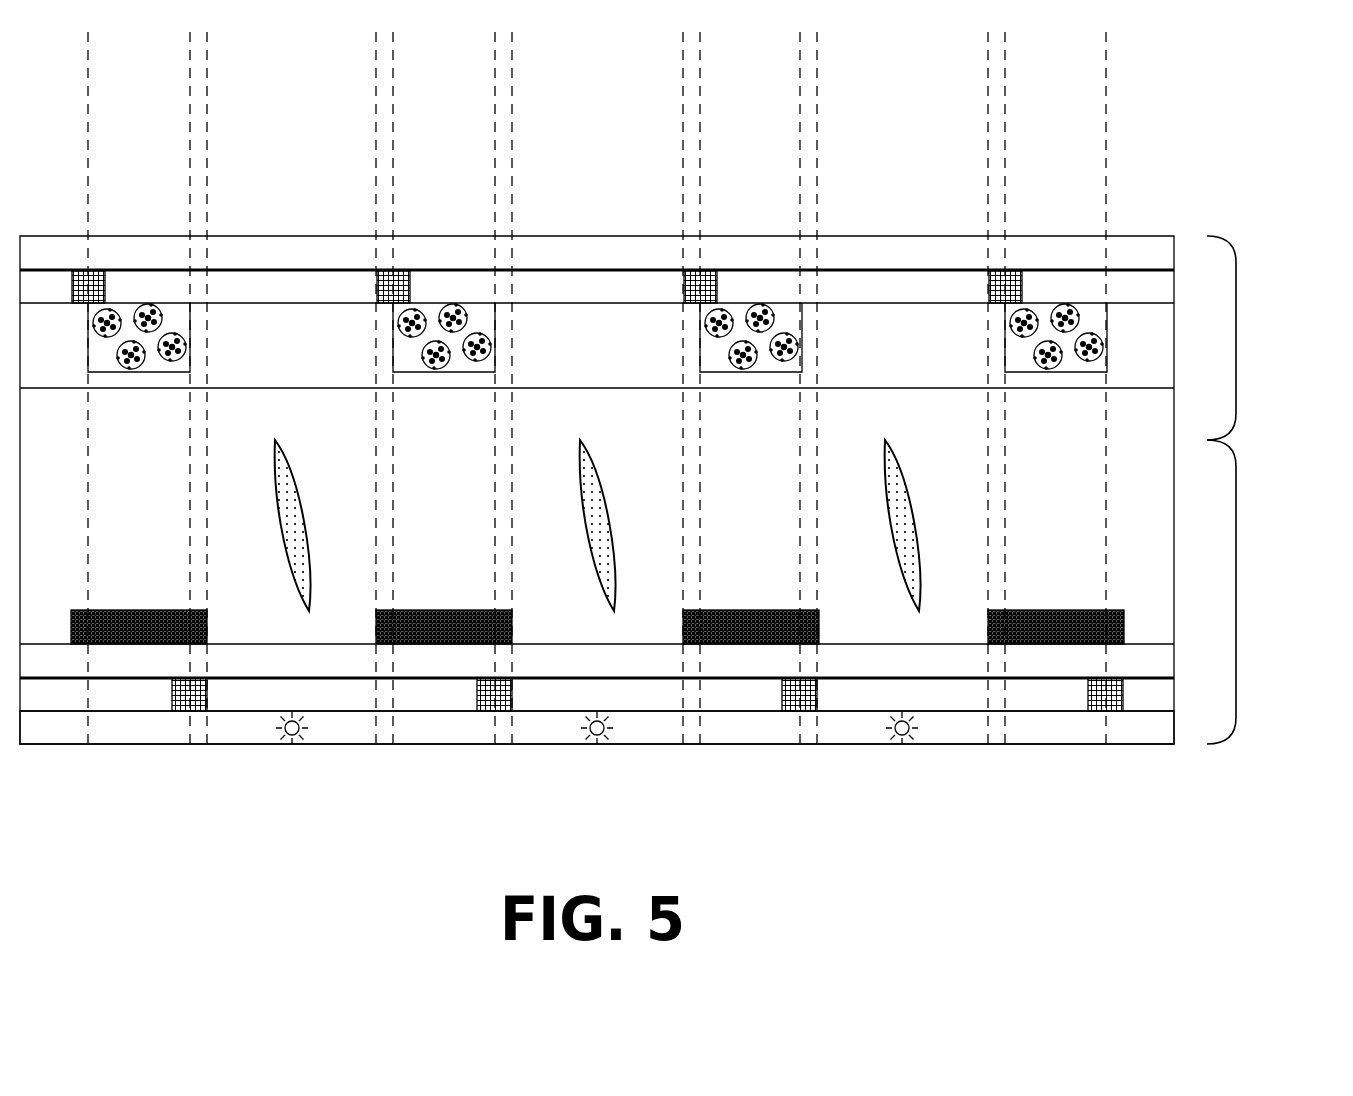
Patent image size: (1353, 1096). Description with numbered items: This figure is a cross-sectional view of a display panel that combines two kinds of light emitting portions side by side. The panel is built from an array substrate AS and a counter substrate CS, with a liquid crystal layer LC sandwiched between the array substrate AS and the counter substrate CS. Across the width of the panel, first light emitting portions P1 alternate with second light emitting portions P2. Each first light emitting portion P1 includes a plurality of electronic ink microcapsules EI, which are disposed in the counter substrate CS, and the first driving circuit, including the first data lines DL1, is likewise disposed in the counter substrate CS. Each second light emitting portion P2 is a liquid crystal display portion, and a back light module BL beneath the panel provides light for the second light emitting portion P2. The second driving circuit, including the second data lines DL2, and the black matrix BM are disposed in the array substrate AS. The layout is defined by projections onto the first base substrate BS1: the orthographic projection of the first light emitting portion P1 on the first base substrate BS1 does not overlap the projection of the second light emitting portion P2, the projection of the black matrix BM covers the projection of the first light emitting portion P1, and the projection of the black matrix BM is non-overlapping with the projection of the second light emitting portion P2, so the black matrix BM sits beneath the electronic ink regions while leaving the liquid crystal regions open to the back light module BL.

The first light emitting portion P1 is at (1106, 67).
The second light emitting portion P2 is at (988, 67).
The first data line DL1 is at (86, 285).
The electronic ink microcapsule EI is at (440, 358).
The liquid crystal layer LC is at (902, 517).
The black matrix BM is at (142, 610).
The second data line DL2 is at (192, 698).
The back light module BL is at (600, 735).
The first base substrate BS1 is at (1140, 730).
The counter substrate CS is at (1236, 338).
The array substrate AS is at (1236, 595).